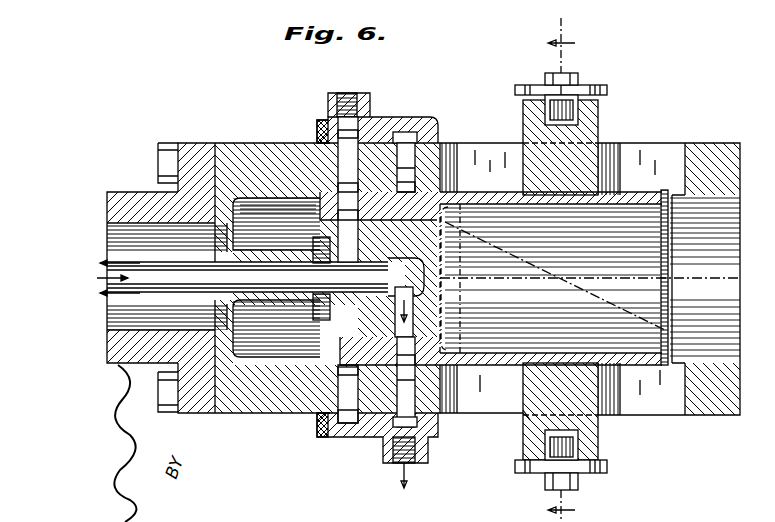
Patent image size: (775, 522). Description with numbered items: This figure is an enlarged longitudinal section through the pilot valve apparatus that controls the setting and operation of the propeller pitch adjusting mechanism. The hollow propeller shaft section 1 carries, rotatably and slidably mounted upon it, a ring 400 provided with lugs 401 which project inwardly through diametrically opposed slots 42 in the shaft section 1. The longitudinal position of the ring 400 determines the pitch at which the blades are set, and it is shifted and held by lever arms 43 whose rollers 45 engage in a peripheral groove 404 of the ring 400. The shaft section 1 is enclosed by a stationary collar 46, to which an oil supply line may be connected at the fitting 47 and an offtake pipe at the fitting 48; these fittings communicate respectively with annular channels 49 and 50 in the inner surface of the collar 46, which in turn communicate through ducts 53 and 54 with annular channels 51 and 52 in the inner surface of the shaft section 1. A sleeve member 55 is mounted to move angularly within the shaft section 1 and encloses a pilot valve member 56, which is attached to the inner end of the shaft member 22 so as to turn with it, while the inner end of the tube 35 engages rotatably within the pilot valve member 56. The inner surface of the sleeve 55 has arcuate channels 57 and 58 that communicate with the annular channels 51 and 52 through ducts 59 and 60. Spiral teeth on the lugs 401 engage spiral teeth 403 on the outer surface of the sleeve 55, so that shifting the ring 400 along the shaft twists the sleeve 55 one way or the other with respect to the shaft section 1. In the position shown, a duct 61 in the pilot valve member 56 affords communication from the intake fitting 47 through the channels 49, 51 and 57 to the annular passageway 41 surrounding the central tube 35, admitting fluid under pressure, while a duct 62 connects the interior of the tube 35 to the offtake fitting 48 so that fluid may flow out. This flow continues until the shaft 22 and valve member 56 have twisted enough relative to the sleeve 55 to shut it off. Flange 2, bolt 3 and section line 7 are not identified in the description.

The propeller shaft section 1 is at (230, 146).
The flange 2 is at (121, 192).
The bolt 3 is at (158, 159).
The section line 7 is at (572, 270).
The shaft member 22 is at (240, 308).
The tube 35 is at (194, 297).
The annular passageway 41 is at (167, 291).
The slots 42 is at (671, 158).
The arms 43 is at (604, 90).
The rollers 45 is at (546, 110).
The stationary collar 46 is at (378, 118).
The fitting 47 is at (352, 94).
The fitting 48 is at (383, 454).
The annular channel 49 is at (320, 122).
The annular channel 50 is at (406, 130).
The annular channel 51 is at (338, 172).
The annular channel 52 is at (418, 178).
The duct 53 is at (318, 141).
The duct 54 is at (413, 170).
The sleeve member 55 is at (432, 198).
The pilot valve member 56 is at (446, 268).
The arcuate channel 57 is at (304, 218).
The arcuate channel 58 is at (446, 325).
The duct 59 is at (318, 206).
The duct 60 is at (444, 341).
The duct 61 is at (347, 228).
The duct 62 is at (446, 300).
The ring 400 is at (600, 126).
The lugs 401 is at (580, 173).
The spiral teeth 403 is at (612, 194).
The peripheral groove 404 is at (537, 434).